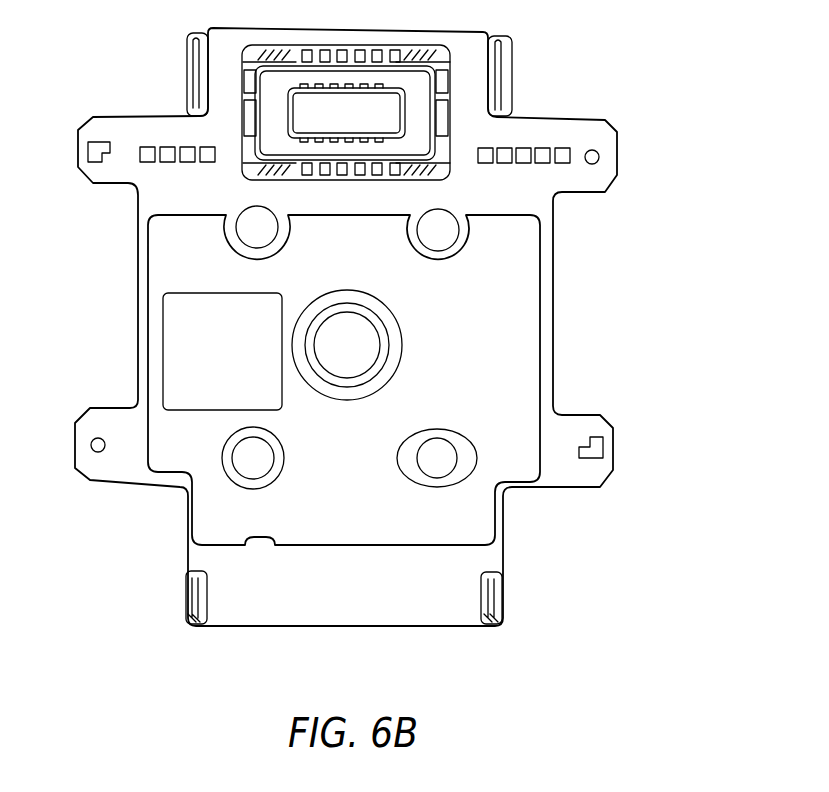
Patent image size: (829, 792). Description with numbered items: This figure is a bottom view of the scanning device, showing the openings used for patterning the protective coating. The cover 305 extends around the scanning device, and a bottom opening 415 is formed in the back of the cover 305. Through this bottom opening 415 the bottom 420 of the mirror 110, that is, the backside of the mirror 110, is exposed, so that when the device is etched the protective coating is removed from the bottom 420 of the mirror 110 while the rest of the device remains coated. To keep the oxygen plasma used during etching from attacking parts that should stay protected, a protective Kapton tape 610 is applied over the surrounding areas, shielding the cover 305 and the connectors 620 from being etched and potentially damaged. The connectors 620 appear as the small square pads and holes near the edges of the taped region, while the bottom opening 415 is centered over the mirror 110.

The mirror 110 is at (373, 332).
The cover 305 is at (498, 82).
The bottom opening 415 is at (388, 345).
The bottom of mirror 420 is at (347, 327).
The Kapton tape 610 is at (555, 118).
The connectors 620 is at (107, 125).